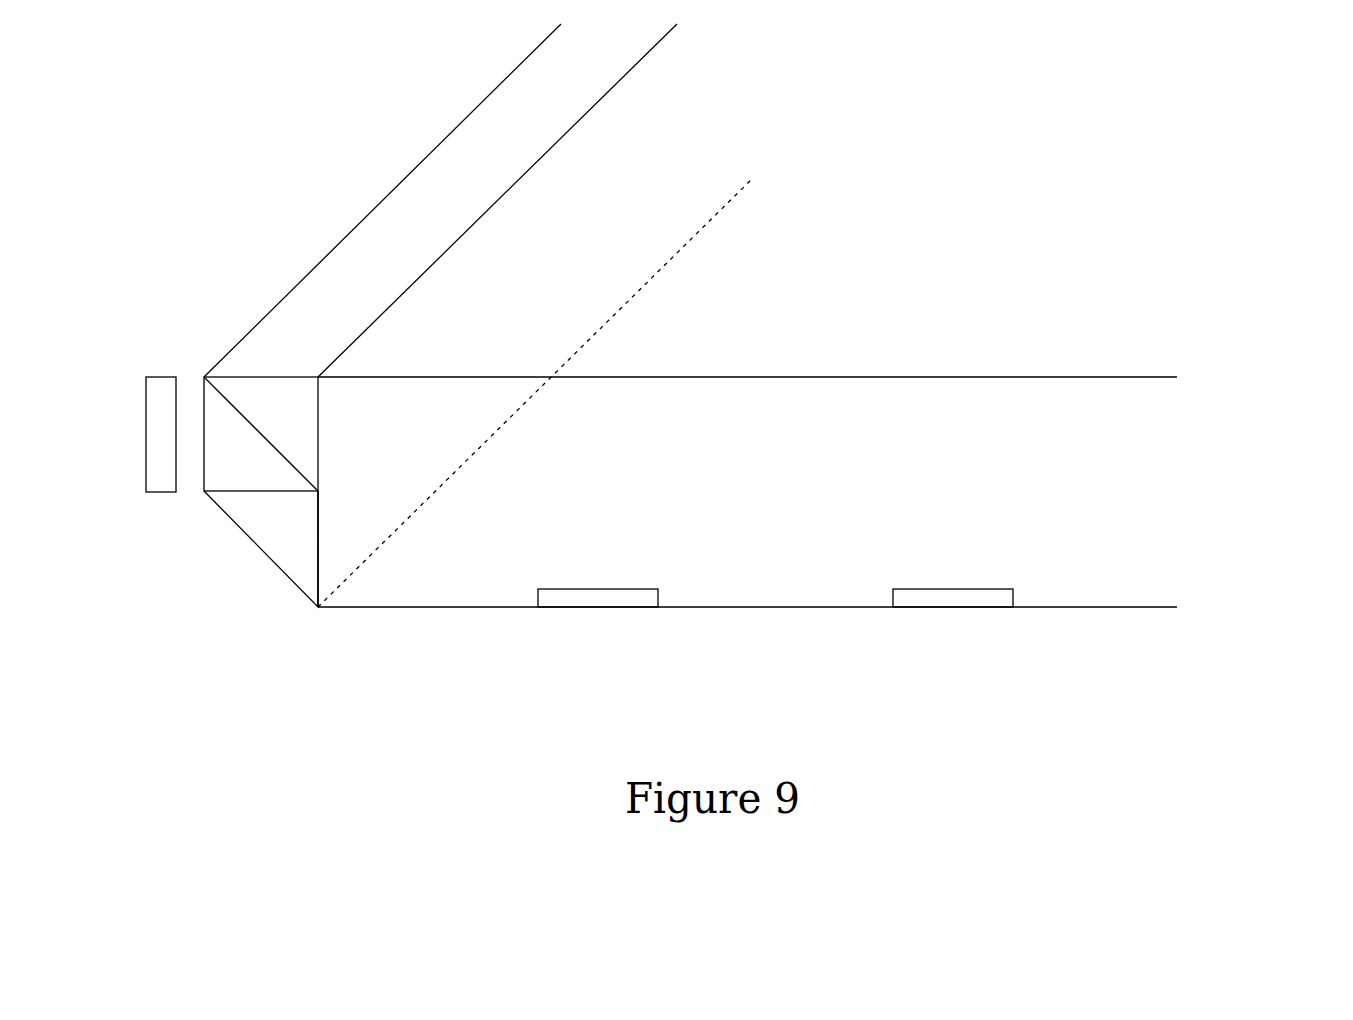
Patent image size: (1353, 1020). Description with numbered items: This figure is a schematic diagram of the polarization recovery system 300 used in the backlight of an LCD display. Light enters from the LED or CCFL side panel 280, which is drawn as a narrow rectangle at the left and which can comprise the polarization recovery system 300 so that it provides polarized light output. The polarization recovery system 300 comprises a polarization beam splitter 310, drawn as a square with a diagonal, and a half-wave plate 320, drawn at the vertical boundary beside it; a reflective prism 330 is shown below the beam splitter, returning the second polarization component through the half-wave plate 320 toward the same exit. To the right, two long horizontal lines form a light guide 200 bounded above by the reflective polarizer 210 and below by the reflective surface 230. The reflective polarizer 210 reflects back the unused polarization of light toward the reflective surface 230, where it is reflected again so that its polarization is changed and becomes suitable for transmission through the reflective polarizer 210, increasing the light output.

The light guide 200 is at (825, 493).
The reflective polarizer 210 is at (1090, 377).
The reflective surface 230 is at (1108, 606).
The side panel 280 is at (162, 492).
The polarization recovery system 300 is at (190, 357).
The polarization beam splitter 310 is at (262, 432).
The half-wave plate 320 is at (318, 523).
The reflective prism 330 is at (278, 570).